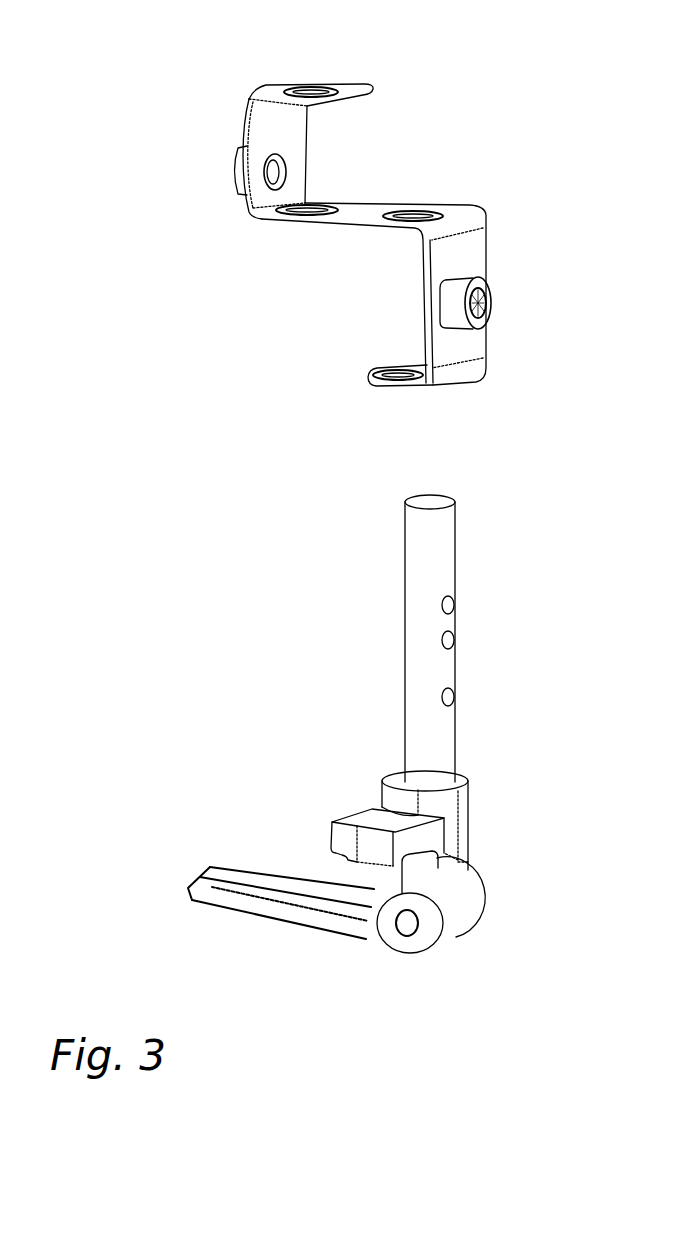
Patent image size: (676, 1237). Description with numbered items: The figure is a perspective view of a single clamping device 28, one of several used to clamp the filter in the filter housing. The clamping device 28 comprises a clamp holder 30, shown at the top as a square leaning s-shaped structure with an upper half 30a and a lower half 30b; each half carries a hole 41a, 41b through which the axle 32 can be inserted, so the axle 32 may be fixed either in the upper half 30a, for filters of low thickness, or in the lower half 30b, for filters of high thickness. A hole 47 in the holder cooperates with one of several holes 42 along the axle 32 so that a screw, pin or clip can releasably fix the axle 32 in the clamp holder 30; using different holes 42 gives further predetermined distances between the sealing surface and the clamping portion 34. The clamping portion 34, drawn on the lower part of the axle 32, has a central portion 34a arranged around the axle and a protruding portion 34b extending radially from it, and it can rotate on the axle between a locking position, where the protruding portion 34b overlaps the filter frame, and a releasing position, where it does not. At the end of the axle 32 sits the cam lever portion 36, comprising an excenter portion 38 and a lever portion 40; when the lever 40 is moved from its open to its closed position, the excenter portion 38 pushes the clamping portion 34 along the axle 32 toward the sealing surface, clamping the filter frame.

The clamping device 28 is at (146, 342).
The clamp holder 30 is at (345, 85).
The upper half of the clamp holder structure 30a is at (303, 157).
The lower half of the clamp holder structure 30b is at (420, 328).
The first slot 41a is at (308, 84).
The second slot 41b is at (428, 207).
The hole in the clamp holder 47 is at (228, 163).
The axle 32 is at (408, 595).
The holes in the axle 42 is at (455, 595).
The clamping portion 34 is at (467, 803).
The central portion 34a is at (467, 857).
The protruding portion 34b is at (336, 842).
The cam lever portion 36 is at (362, 943).
The excenter portion 38 is at (477, 883).
The lever portion 40 is at (277, 923).